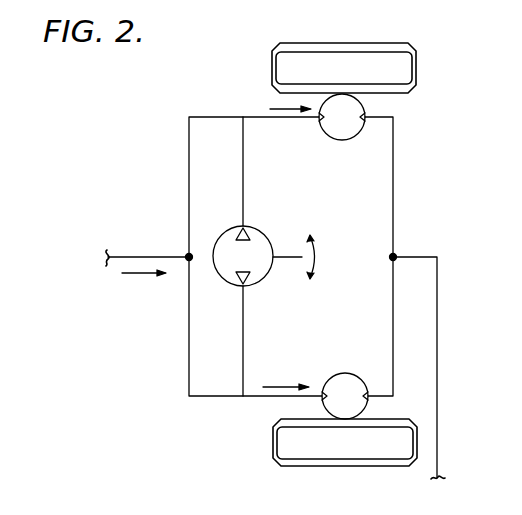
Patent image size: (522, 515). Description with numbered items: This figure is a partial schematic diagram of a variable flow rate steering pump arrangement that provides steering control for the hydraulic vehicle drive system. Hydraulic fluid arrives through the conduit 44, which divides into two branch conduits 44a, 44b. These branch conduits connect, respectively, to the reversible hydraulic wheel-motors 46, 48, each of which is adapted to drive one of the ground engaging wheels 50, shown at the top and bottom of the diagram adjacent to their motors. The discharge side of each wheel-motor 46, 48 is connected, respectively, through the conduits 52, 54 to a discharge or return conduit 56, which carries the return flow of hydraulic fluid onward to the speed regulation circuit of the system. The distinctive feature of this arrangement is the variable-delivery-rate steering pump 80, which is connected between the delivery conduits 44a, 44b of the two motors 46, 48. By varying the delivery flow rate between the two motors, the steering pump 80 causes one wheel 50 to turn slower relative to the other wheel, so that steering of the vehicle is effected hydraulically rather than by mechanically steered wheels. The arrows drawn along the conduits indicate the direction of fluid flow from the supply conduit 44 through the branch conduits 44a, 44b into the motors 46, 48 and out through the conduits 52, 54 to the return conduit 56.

The conduit 44 is at (158, 257).
The conduit 44a is at (189, 172).
The conduit 44b is at (189, 345).
The reversible hydraulic wheel-motor 46 is at (354, 129).
The reversible hydraulic wheel-motor 48 is at (357, 408).
The ground engaging wheel 50 is at (357, 77).
The conduit 52 is at (393, 196).
The conduit 54 is at (393, 352).
The discharge or return conduit 56 is at (437, 410).
The variable-delivery-rate steering pump 80 is at (254, 265).